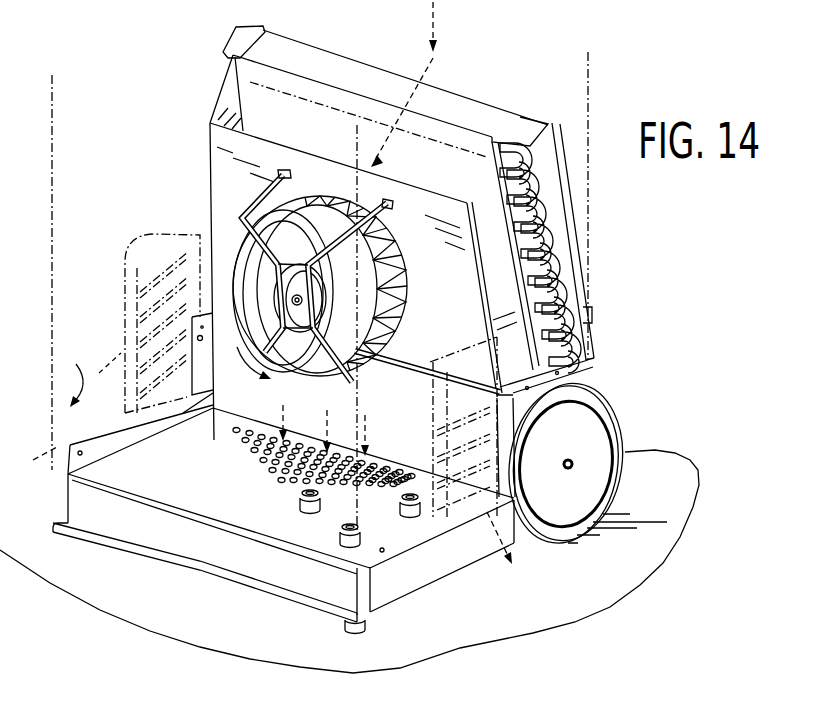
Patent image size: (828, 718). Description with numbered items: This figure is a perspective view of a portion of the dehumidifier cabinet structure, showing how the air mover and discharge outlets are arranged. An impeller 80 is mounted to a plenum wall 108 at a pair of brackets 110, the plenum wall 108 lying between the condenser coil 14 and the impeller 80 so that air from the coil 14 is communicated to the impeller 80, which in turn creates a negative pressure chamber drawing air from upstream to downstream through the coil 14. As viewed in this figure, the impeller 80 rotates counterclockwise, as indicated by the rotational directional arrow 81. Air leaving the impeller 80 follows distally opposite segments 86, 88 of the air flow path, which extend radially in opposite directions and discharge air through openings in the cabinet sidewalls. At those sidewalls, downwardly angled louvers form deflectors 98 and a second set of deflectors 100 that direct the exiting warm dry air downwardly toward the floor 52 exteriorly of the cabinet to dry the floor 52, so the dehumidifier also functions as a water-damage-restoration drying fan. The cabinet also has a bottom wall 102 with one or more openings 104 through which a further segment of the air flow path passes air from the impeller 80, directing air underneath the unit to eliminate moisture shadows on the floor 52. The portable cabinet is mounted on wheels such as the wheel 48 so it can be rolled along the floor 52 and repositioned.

The condenser coil 14 is at (550, 273).
The wheel 48 is at (600, 402).
The floor 52 is at (507, 623).
The impeller 80 is at (287, 207).
The rotational directional arrow 81 is at (245, 381).
The air flow path segment 86 is at (497, 538).
The air flow path segment 88 is at (93, 371).
The deflectors 98 is at (462, 455).
The deflectors 100 is at (165, 277).
The bottom wall 102 is at (207, 497).
The openings 104 is at (305, 470).
The plenum wall 108 is at (467, 252).
The brackets 110 is at (240, 232).